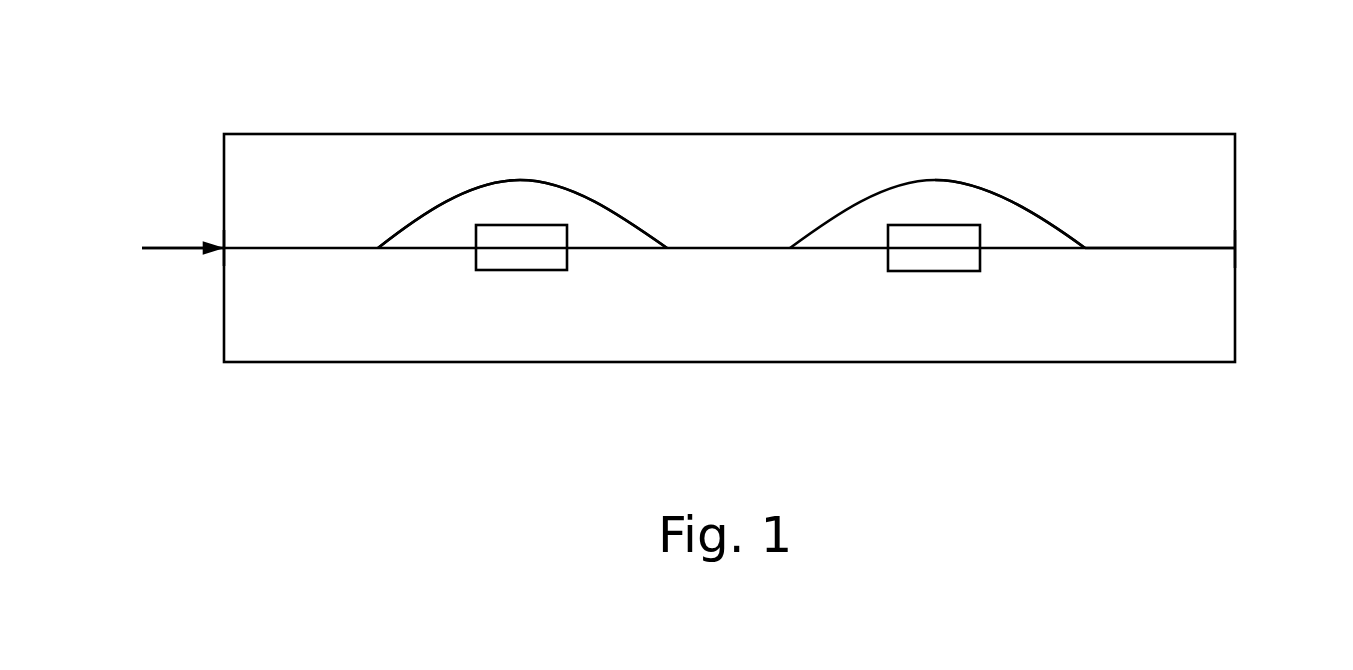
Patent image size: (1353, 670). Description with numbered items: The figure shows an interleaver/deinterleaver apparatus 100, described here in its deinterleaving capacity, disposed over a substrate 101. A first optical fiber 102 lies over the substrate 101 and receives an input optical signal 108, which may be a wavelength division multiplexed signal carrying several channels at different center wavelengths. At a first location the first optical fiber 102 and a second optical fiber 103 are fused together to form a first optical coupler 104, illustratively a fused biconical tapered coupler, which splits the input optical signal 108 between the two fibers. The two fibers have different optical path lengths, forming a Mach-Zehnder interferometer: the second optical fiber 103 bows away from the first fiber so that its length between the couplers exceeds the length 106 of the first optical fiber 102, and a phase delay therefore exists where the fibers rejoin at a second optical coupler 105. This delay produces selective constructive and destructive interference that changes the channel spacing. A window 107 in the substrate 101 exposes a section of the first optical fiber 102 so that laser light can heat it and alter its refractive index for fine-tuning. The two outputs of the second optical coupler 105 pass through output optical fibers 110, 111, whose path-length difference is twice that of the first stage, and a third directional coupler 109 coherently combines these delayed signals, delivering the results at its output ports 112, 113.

The interleaver/deinterleaver apparatus 100 is at (1187, 40).
The substrate 101 is at (1130, 155).
The first optical fiber 102 is at (260, 252).
The second optical fiber 103 is at (520, 180).
The first optical coupler 104 is at (380, 247).
The second optical coupler 105 is at (667, 248).
The length of the first optical fiber between the couplers 106 is at (598, 250).
The window 107 is at (518, 272).
The input optical signal 108 is at (140, 250).
The third directional coupler 109 is at (1083, 248).
The output optical fiber 110 is at (970, 182).
The output optical fiber 111 is at (1037, 252).
The output port 112 is at (937, 272).
The output port 113 is at (1235, 249).